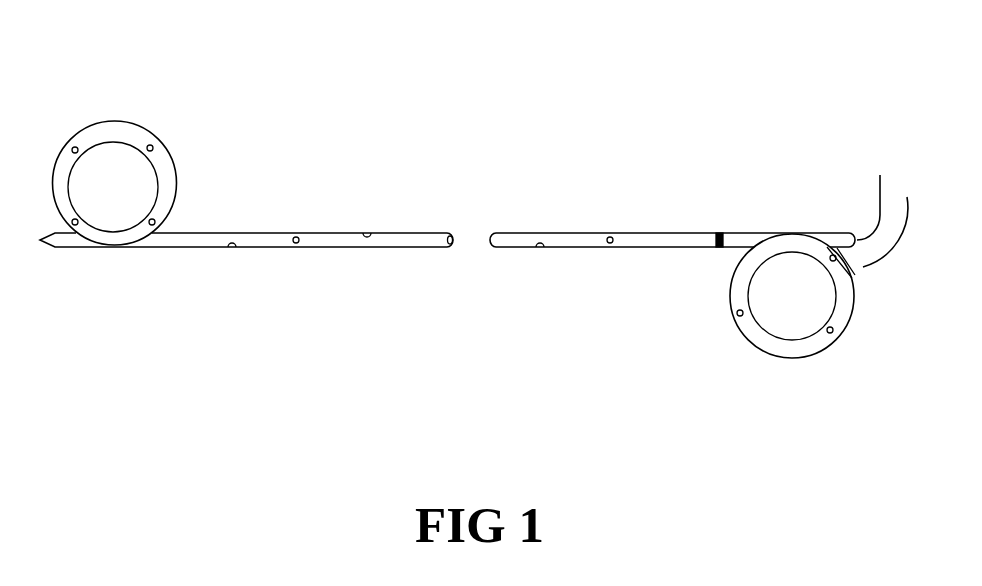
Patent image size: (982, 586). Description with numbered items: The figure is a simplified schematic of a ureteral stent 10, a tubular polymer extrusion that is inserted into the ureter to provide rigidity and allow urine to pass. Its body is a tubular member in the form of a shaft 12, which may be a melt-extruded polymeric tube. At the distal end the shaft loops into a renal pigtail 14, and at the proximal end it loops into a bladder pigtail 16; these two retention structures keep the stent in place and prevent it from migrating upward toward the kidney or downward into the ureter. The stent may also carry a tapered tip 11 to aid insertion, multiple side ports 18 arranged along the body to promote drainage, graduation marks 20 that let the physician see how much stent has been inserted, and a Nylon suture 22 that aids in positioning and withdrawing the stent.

The stent 10 is at (334, 134).
The tapered tip 11 is at (55, 242).
The shaft 12 is at (427, 238).
The renal pigtail 14 is at (113, 135).
The bladder pigtail 16 is at (776, 343).
The side ports 18 is at (613, 237).
The graduation marks 20 is at (723, 232).
The Nylon suture 22 is at (863, 263).